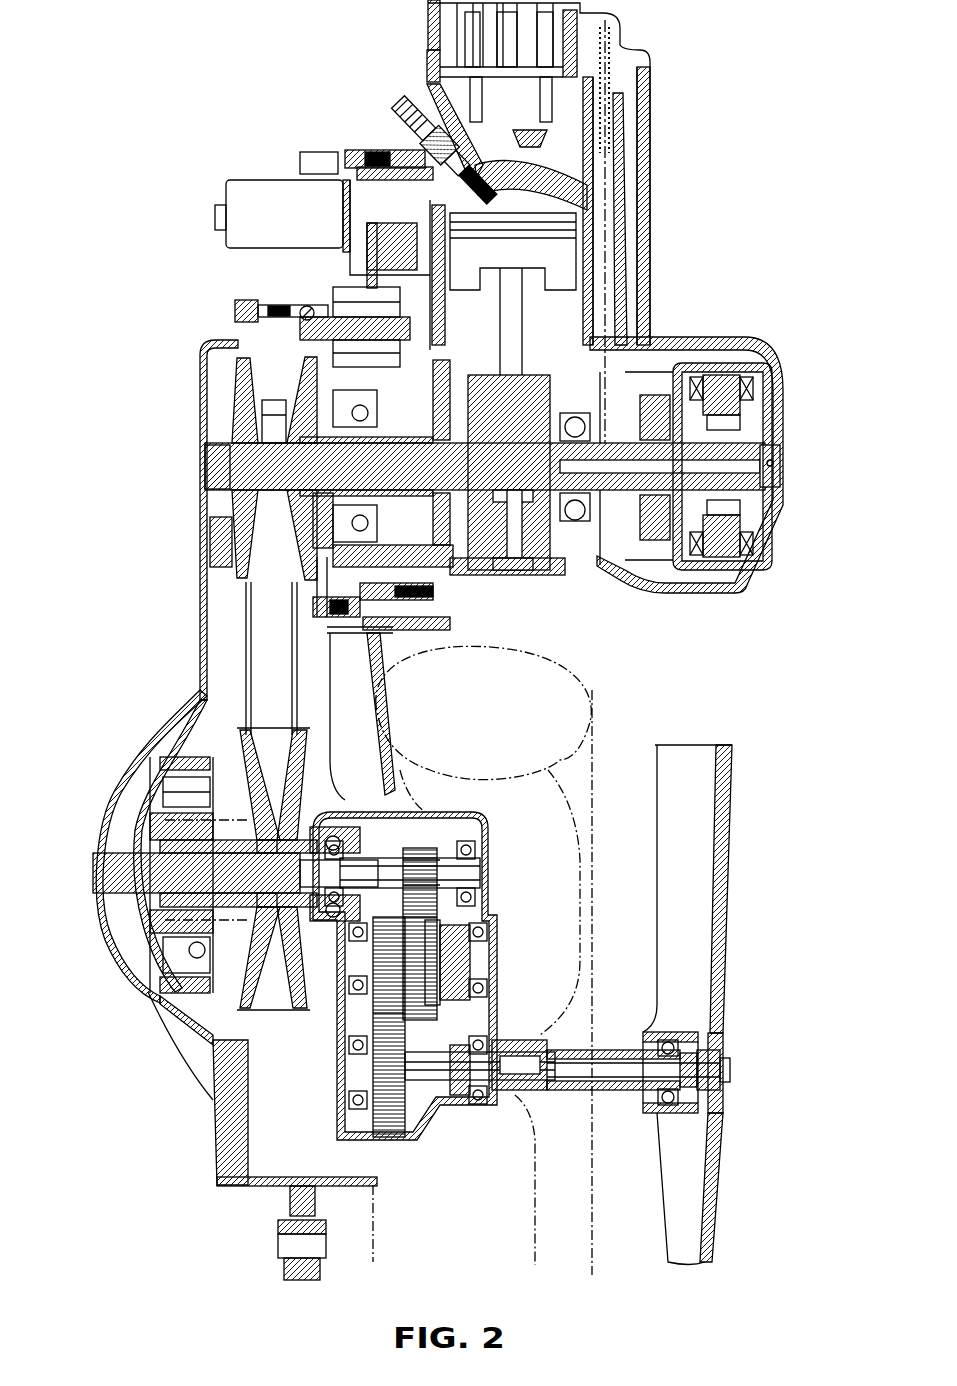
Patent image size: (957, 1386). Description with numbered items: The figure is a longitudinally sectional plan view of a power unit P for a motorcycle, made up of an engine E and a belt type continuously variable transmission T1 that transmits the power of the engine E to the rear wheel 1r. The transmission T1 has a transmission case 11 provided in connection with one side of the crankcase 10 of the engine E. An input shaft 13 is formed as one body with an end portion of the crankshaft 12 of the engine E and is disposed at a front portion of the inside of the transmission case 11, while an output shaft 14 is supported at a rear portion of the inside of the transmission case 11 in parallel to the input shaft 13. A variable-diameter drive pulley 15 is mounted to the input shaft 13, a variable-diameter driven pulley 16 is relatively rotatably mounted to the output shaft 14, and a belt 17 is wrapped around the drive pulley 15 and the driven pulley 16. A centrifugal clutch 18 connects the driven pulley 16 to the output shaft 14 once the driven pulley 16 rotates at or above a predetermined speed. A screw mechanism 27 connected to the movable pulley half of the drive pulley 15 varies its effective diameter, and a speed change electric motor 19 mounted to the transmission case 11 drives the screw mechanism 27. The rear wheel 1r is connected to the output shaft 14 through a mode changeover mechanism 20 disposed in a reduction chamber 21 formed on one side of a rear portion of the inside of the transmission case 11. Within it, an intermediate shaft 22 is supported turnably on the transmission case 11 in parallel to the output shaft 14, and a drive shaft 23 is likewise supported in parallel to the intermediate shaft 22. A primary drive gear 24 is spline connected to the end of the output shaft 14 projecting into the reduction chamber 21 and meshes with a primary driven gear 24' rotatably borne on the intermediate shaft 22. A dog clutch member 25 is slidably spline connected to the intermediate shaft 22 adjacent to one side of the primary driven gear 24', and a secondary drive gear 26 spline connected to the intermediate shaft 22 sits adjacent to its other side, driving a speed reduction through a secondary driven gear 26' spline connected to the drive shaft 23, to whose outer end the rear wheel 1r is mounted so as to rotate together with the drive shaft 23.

The power unit P is at (76, 118).
The engine E is at (342, 136).
The belt type continuously variable transmission T1 is at (190, 326).
The rear wheel 1r is at (600, 657).
The crankcase 10 is at (535, 577).
The transmission case 11 is at (200, 612).
The crankshaft 12 is at (640, 335).
The input shaft 13 is at (215, 472).
The output shaft 14 is at (465, 872).
The drive pulley 15 is at (228, 410).
The driven pulley 16 is at (243, 991).
The belt 17 is at (266, 1012).
The centrifugal clutch 18 is at (160, 775).
The speed change electric motor 19 is at (280, 190).
The mode changeover mechanism 20 is at (428, 843).
The reduction chamber 21 is at (400, 830).
The intermediate shaft 22 is at (480, 960).
The drive shaft 23 is at (430, 1085).
The primary drive gear 24 is at (468, 878).
The primary driven gear 24' is at (455, 1013).
The dog clutch member 25 is at (458, 968).
The secondary drive gear 26 is at (388, 949).
The secondary driven gear 26' is at (385, 1101).
The screw mechanism 27 is at (440, 338).